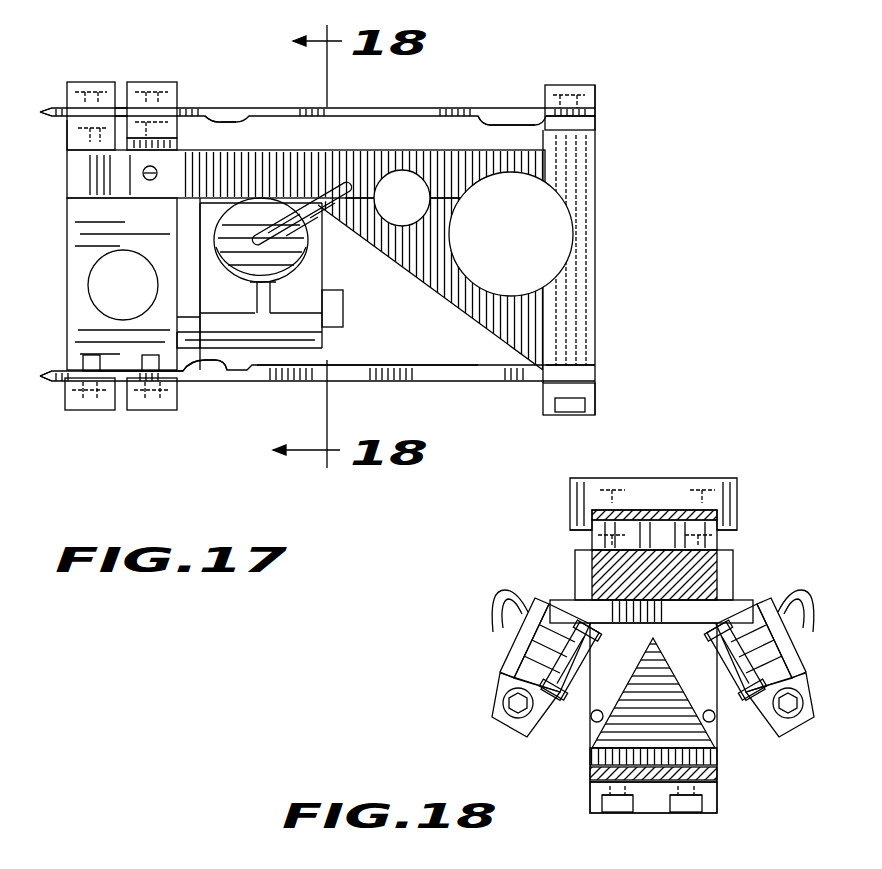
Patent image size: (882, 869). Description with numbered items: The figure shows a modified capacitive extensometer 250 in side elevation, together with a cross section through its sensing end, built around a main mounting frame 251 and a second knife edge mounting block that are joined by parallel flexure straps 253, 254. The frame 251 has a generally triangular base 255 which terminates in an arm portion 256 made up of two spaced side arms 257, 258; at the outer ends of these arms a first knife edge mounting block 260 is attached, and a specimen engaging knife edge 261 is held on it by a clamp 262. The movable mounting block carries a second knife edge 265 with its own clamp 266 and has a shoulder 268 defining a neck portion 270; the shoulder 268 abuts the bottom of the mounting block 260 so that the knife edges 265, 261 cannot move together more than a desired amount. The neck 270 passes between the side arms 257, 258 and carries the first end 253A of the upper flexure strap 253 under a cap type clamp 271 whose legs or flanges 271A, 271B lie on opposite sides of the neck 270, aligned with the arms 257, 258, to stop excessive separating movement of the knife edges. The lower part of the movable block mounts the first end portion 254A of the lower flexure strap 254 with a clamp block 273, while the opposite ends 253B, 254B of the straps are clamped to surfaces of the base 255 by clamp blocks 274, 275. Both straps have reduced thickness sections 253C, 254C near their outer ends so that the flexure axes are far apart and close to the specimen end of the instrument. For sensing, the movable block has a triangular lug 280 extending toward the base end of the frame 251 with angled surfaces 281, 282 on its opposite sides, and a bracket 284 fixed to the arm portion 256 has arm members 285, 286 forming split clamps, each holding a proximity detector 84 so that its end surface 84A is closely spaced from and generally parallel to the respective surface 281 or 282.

In FIG. 17, the proximity detector 84 is at (285, 243).
In FIG. 18, the proximity detector 84 is at (717, 678).
In FIG. 18, the end surface of proximity detector 84A is at (715, 722).
In FIG. 17, the extensometer 250 is at (607, 193).
In FIG. 17, the main mounting frame 251 is at (567, 297).
In FIG. 17, the flexure strap 253 is at (423, 108).
In FIG. 18, the flexure strap 253 is at (718, 508).
In FIG. 17, the first end of flexure beam 253A is at (180, 107).
In FIG. 17, the opposite end of flexure strap 253B is at (593, 116).
In FIG. 17, the reduced thickness section 253C is at (236, 108).
In FIG. 17, the flexure strap 254 is at (432, 382).
In FIG. 18, the flexure strap 254 is at (718, 782).
In FIG. 17, the first end portion of flexure strap 254A is at (213, 373).
In FIG. 17, the opposite end of flexure strap 254B is at (592, 372).
In FIG. 17, the reduced thickness section 254C is at (510, 370).
In FIG. 17, the base 255 is at (580, 257).
In FIG. 17, the arm portion 256 is at (280, 177).
In FIG. 18, the arm portion 256 is at (700, 578).
In FIG. 17, the side arm 257 is at (82, 173).
In FIG. 18, the side arm 257 is at (577, 572).
In FIG. 18, the side arm 258 is at (735, 565).
In FIG. 17, the first knife edge mounting block 260 is at (67, 126).
In FIG. 17, the specimen engaging knife edge 261 is at (46, 107).
In FIG. 17, the clamp 262 is at (110, 82).
In FIG. 17, the knife edge 265 is at (55, 383).
In FIG. 17, the clamp 266 is at (107, 410).
In FIG. 17, the shoulder 268 is at (60, 206).
In FIG. 17, the neck portion 270 is at (173, 147).
In FIG. 17, the cap type clamp 271 is at (167, 82).
In FIG. 18, the cap type clamp 271 is at (655, 479).
In FIG. 17, the leg or flange 271A is at (180, 128).
In FIG. 18, the leg or flange 271A is at (570, 512).
In FIG. 18, the leg or flange 271B is at (737, 520).
In FIG. 17, the clamp block 273 is at (170, 410).
In FIG. 18, the clamp block 273 is at (618, 813).
In FIG. 17, the clamp block 274 is at (575, 84).
In FIG. 17, the clamp block 275 is at (293, 295).
In FIG. 17, the triangular shaped arm or lug 280 is at (323, 343).
In FIG. 18, the triangular shaped arm or lug 280 is at (657, 780).
In FIG. 18, the surface 281 is at (593, 743).
In FIG. 18, the surface 282 is at (720, 744).
In FIG. 18, the bracket 284 is at (667, 613).
In FIG. 18, the arm member 285 is at (500, 668).
In FIG. 18, the arm member 286 is at (800, 640).